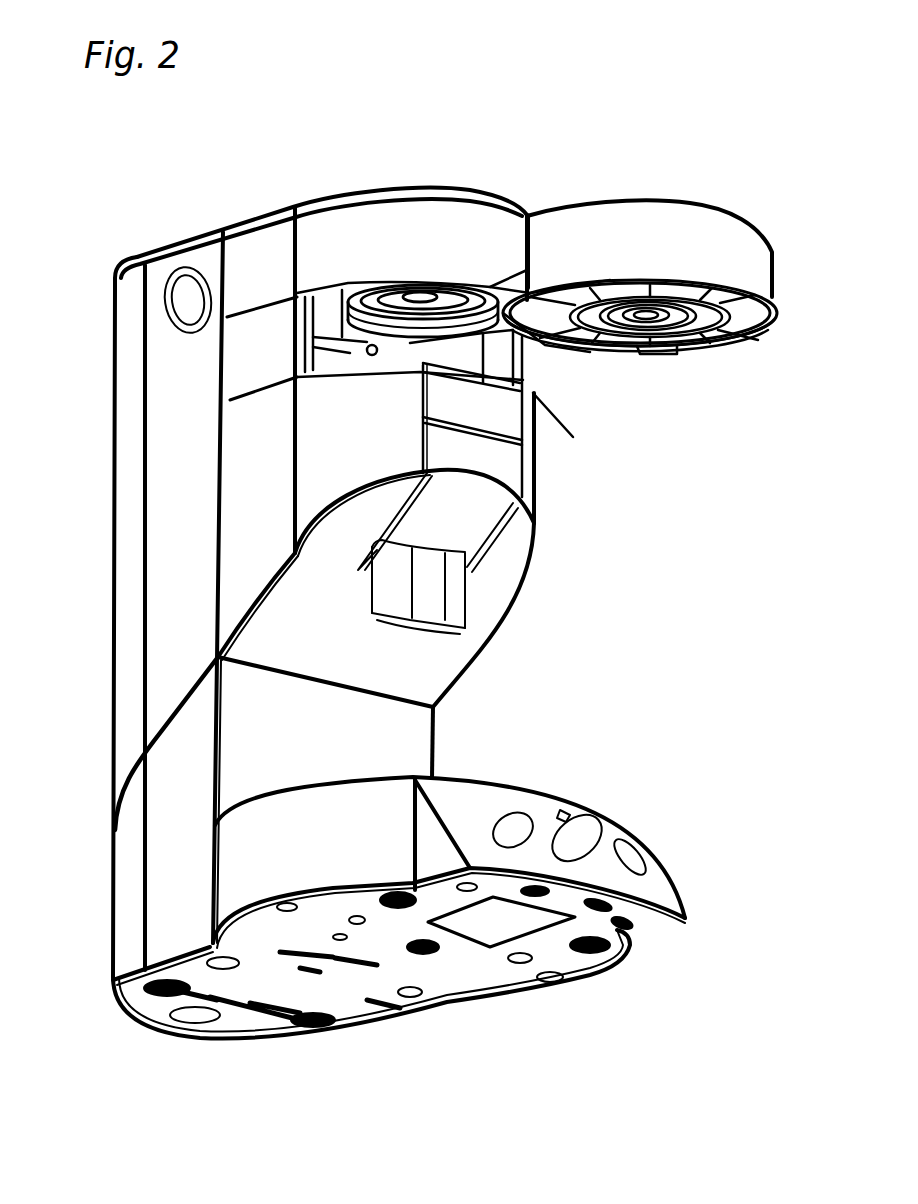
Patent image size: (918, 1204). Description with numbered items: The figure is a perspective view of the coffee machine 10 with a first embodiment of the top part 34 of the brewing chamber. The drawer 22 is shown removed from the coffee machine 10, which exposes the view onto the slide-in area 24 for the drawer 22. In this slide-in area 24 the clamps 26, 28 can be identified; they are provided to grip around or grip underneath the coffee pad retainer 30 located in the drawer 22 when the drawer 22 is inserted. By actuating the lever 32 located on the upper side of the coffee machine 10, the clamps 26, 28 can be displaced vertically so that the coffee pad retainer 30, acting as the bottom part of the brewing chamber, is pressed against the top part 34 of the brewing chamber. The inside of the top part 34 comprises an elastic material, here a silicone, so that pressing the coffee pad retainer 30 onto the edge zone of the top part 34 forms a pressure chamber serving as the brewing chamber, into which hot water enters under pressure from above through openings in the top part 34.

The coffee machine 10 is at (52, 258).
The drawer 22 is at (697, 220).
The slide-in area 24 is at (528, 358).
The clamp 26 is at (297, 340).
The clamp 28 is at (527, 356).
The coffee pad retainer 30 is at (693, 353).
The lever 32 is at (480, 188).
The top part of the brewing chamber 34 is at (362, 283).